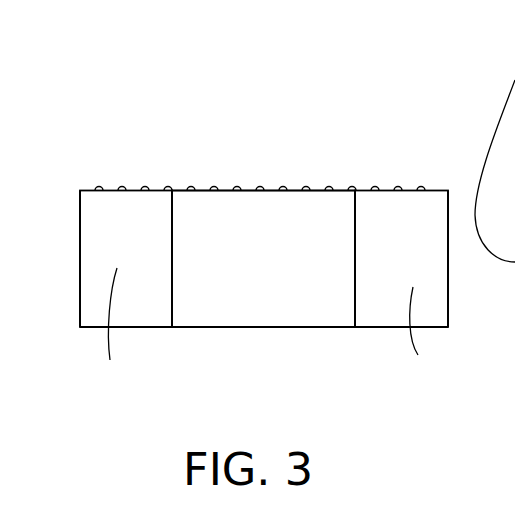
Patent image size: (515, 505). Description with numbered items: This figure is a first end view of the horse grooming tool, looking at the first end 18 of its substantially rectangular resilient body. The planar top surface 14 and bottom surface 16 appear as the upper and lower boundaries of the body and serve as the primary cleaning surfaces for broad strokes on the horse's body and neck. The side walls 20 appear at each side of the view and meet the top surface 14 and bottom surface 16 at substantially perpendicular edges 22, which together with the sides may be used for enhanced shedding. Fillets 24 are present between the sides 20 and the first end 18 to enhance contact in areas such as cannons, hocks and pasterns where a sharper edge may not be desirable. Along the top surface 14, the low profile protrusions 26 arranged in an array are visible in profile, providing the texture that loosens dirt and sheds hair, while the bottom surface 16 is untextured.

The top surface 14 is at (228, 188).
The bottom surface 16 is at (322, 327).
The first end 18 is at (262, 187).
The side walls 20 is at (80, 257).
The edges 22 is at (79, 187).
The fillets 24 is at (110, 360).
The protrusions 26 is at (168, 188).